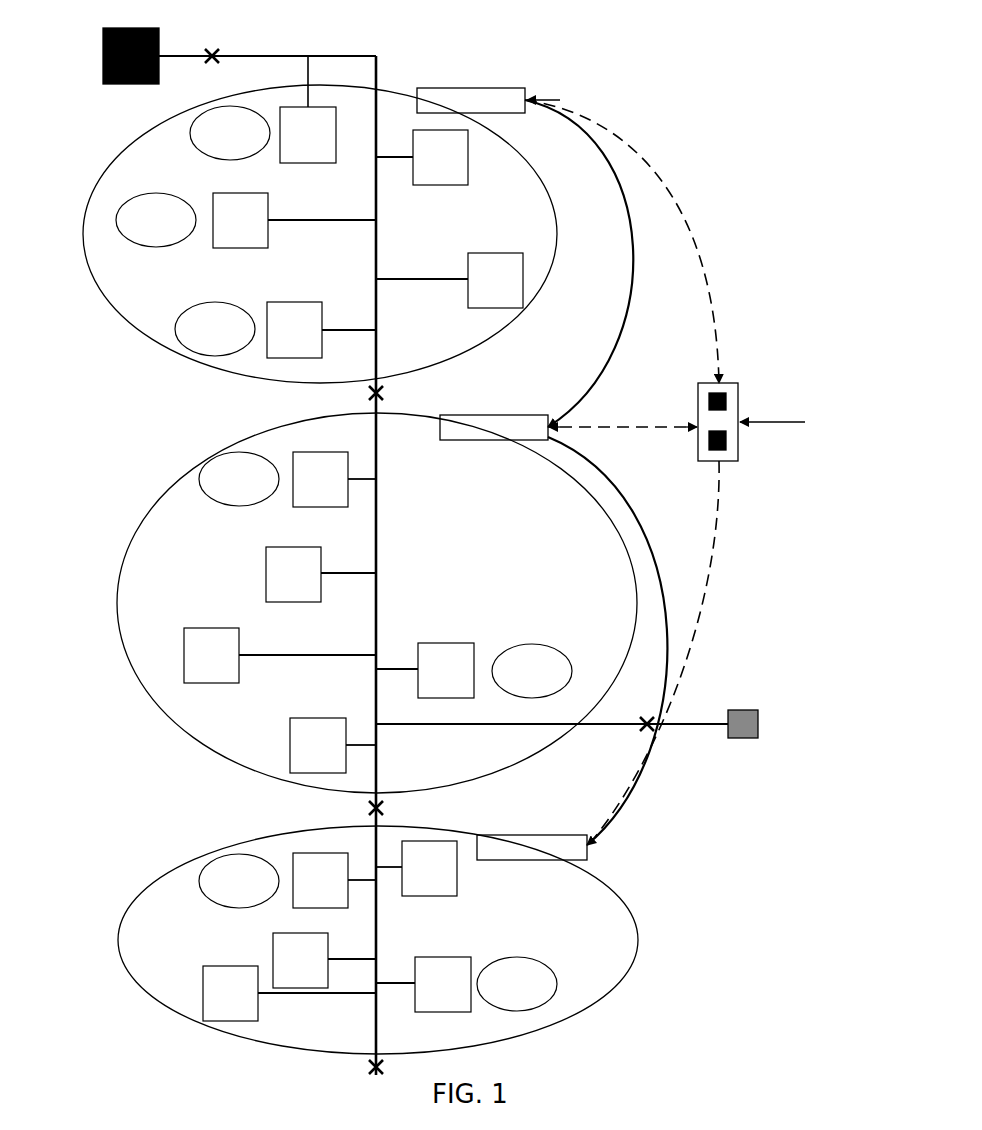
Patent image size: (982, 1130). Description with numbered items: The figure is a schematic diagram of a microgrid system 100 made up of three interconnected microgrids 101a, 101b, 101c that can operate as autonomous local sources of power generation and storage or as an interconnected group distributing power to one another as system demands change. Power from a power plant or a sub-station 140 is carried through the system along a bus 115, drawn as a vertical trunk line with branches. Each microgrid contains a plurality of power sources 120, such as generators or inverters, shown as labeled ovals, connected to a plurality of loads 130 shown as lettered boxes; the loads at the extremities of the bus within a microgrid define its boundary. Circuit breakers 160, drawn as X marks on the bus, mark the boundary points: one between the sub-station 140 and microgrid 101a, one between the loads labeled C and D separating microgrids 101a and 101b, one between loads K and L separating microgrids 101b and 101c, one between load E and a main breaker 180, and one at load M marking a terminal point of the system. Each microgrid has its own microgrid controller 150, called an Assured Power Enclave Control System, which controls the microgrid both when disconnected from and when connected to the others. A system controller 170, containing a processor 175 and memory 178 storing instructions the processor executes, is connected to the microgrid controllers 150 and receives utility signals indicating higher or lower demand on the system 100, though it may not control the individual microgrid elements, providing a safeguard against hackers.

The microgrid system 100 is at (676, 96).
The microgrid 101a is at (126, 356).
The microgrid 101b is at (134, 716).
The microgrid 101c is at (650, 938).
The bus 115 is at (352, 56).
The power source 120 is at (190, 140).
The load 130 is at (310, 163).
The sub-station 140 is at (103, 60).
The microgrid controller 150 is at (500, 86).
The circuit breaker 160 is at (218, 52).
The system controller 170 is at (738, 455).
The processor 175 is at (709, 402).
The memory 178 is at (709, 444).
The main breaker 180 is at (745, 740).